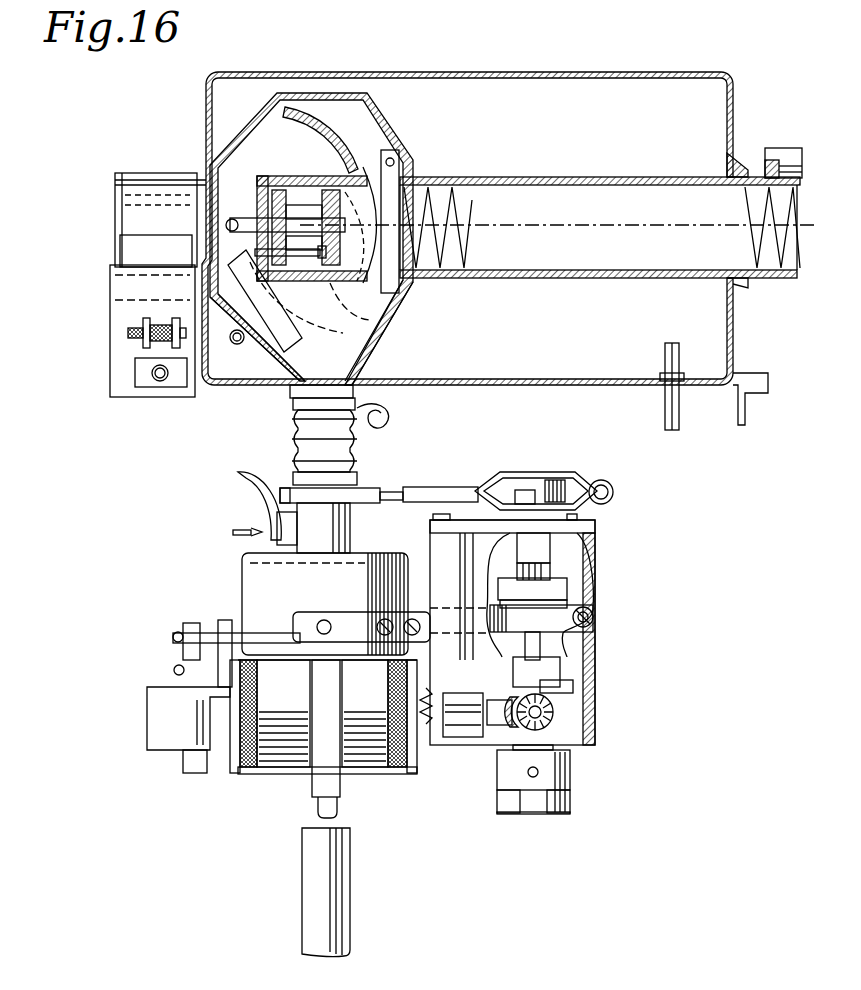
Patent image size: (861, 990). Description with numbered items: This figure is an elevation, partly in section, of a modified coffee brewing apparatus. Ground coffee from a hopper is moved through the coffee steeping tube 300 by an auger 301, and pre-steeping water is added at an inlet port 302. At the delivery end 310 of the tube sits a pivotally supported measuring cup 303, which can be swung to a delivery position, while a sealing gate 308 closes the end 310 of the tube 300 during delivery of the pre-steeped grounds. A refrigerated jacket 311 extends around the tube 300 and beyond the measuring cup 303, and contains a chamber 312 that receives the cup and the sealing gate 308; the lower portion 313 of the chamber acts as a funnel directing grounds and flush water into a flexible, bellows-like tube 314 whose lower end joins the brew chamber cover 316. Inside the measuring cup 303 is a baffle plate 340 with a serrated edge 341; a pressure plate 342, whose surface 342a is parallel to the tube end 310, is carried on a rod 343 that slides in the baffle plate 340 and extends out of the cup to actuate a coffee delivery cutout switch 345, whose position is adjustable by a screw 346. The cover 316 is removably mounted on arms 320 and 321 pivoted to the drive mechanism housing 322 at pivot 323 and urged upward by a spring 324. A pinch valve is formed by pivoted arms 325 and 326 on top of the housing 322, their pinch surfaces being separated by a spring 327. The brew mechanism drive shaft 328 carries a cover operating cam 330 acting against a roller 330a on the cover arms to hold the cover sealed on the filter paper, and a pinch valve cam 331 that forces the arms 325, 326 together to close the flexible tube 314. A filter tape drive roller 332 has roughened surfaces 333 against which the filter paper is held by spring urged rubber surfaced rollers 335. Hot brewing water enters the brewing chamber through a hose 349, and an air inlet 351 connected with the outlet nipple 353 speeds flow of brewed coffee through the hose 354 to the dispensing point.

The coffee steeping tube 300 is at (738, 282).
The auger 301 is at (770, 280).
The inlet port 302 is at (768, 148).
The measuring cup 303 is at (268, 180).
The sealing gate 308 is at (352, 118).
The end of tube 310 is at (404, 138).
The refrigerated jacket 311 is at (645, 78).
The chamber 312 is at (262, 92).
The lower portion of chamber 313 is at (385, 332).
The flexible bellows-like tube 314 is at (357, 452).
The brew chamber cover 316 is at (372, 560).
The arm 320 is at (597, 652).
The arm 321 is at (324, 618).
The drive mechanism housing 322 is at (597, 712).
The pivot 323 is at (594, 620).
The spring 324 is at (567, 603).
The pivoted arm 325 is at (505, 475).
The pivoted arm 326 is at (387, 492).
The spring 327 is at (612, 486).
The brew mechanism drive shaft 328 is at (596, 672).
The cover operating cam 330 is at (567, 580).
The roller 330a is at (512, 700).
The pinch valve cam 331 is at (555, 482).
The filter tape drive roller 332 is at (285, 776).
The roughened surfaces 333 is at (247, 772).
The rubber surfaced rollers 335 is at (323, 716).
The baffle plate 340 is at (272, 192).
The serrated edge 341 is at (280, 190).
The pressure plate 342 is at (328, 190).
The surface of pressure plate 342a is at (425, 214).
The rod 343 is at (300, 225).
The coffee delivery cutout switch 345 is at (128, 300).
The screw 346 is at (135, 345).
The hose 349 is at (240, 470).
The air inlet 351 is at (316, 810).
The outlet nipple 353 is at (345, 820).
The hose 354 is at (355, 924).